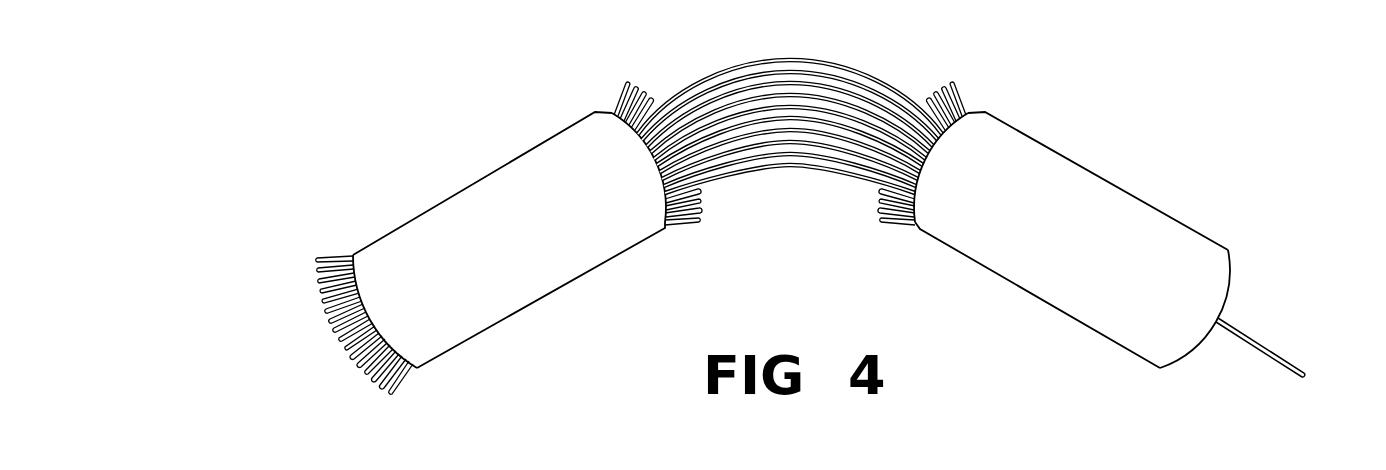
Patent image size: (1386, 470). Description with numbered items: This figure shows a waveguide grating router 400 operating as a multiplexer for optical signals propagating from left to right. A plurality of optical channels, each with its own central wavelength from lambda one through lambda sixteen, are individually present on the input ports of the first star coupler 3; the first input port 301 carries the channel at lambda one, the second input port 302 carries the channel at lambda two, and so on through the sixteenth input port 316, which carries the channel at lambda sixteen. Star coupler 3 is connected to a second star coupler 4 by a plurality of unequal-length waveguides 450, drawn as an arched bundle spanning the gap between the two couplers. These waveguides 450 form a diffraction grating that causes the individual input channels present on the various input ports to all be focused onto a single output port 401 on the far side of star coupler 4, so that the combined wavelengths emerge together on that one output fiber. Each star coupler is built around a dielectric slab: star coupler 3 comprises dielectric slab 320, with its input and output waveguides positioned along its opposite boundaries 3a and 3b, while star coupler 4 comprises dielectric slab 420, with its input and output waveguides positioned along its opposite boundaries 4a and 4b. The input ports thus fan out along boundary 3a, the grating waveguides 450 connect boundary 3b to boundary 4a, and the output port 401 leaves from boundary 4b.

The star coupler 3 is at (476, 169).
The boundary of dielectric slab 3a is at (352, 252).
The boundary of dielectric slab 3b is at (667, 225).
The star coupler 4 is at (1108, 169).
The boundary of dielectric slab 4a is at (918, 225).
The boundary of dielectric slab 4b is at (1230, 253).
The input port 301 is at (314, 255).
The input port 302 is at (314, 272).
The input port 316 is at (287, 293).
The dielectric slab 320 is at (489, 250).
The router 400 is at (465, 33).
The output port 401 is at (1340, 394).
The dielectric slab 420 is at (1056, 250).
The unequal-length waveguides 450 is at (728, 173).